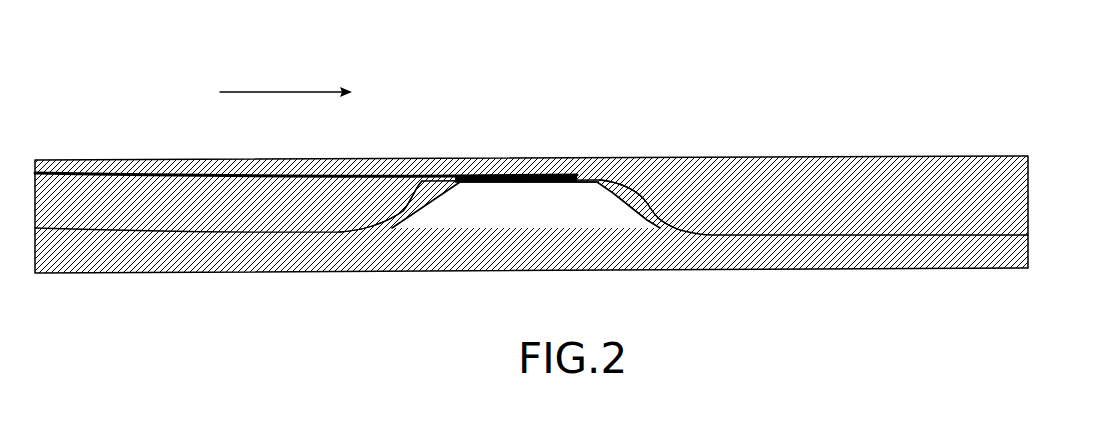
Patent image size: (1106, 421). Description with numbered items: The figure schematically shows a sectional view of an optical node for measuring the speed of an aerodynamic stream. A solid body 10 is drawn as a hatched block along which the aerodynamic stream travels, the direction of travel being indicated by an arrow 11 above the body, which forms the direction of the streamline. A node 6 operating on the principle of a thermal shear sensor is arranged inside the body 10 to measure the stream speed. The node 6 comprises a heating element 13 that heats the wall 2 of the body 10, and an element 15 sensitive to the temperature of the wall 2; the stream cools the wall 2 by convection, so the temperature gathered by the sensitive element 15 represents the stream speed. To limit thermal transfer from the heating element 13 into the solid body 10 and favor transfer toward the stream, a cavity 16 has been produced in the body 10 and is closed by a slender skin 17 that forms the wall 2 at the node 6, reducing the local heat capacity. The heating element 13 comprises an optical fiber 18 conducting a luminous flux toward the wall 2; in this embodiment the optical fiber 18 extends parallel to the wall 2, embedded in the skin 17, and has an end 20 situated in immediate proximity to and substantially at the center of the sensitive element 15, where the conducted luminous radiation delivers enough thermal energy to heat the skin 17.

The wall 2 is at (723, 157).
The node 6 is at (577, 108).
The solid body 10 is at (1000, 210).
The arrow 11 is at (287, 92).
The heating element 13 is at (470, 183).
The sensitive element 15 is at (503, 160).
The cavity 16 is at (574, 215).
The skin 17 is at (583, 160).
The optical fiber 18 is at (378, 160).
The end 20 is at (522, 183).